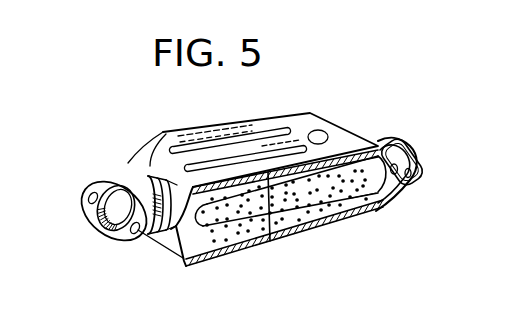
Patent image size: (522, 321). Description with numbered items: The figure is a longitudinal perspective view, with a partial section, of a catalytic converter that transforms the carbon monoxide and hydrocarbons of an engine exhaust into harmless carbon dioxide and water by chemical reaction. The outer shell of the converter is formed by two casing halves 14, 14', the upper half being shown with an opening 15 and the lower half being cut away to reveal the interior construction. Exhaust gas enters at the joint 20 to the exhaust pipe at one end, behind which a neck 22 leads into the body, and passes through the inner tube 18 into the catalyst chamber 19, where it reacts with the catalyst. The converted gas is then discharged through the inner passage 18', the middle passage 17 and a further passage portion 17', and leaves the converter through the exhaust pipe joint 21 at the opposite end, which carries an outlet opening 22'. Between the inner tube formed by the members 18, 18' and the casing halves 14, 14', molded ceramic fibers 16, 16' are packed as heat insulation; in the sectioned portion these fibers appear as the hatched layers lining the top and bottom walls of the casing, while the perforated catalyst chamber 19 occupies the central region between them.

The casing half 14 is at (232, 146).
The casing half 14' is at (165, 242).
The opening in top plate 15 is at (321, 137).
The molded ceramic fibers 16 is at (305, 154).
The molded ceramic fibers 16' is at (284, 250).
The middle passage 17 is at (280, 236).
The outer shell wall portion 17' is at (369, 247).
The inner tube 18 is at (396, 188).
The inner passage 18' is at (393, 204).
The catalyst chamber 19 is at (346, 212).
The joint 20 is at (93, 208).
The exhaust pipe joint 21 is at (417, 158).
The inlet neck 22 is at (137, 226).
The outlet opening 22' is at (430, 194).